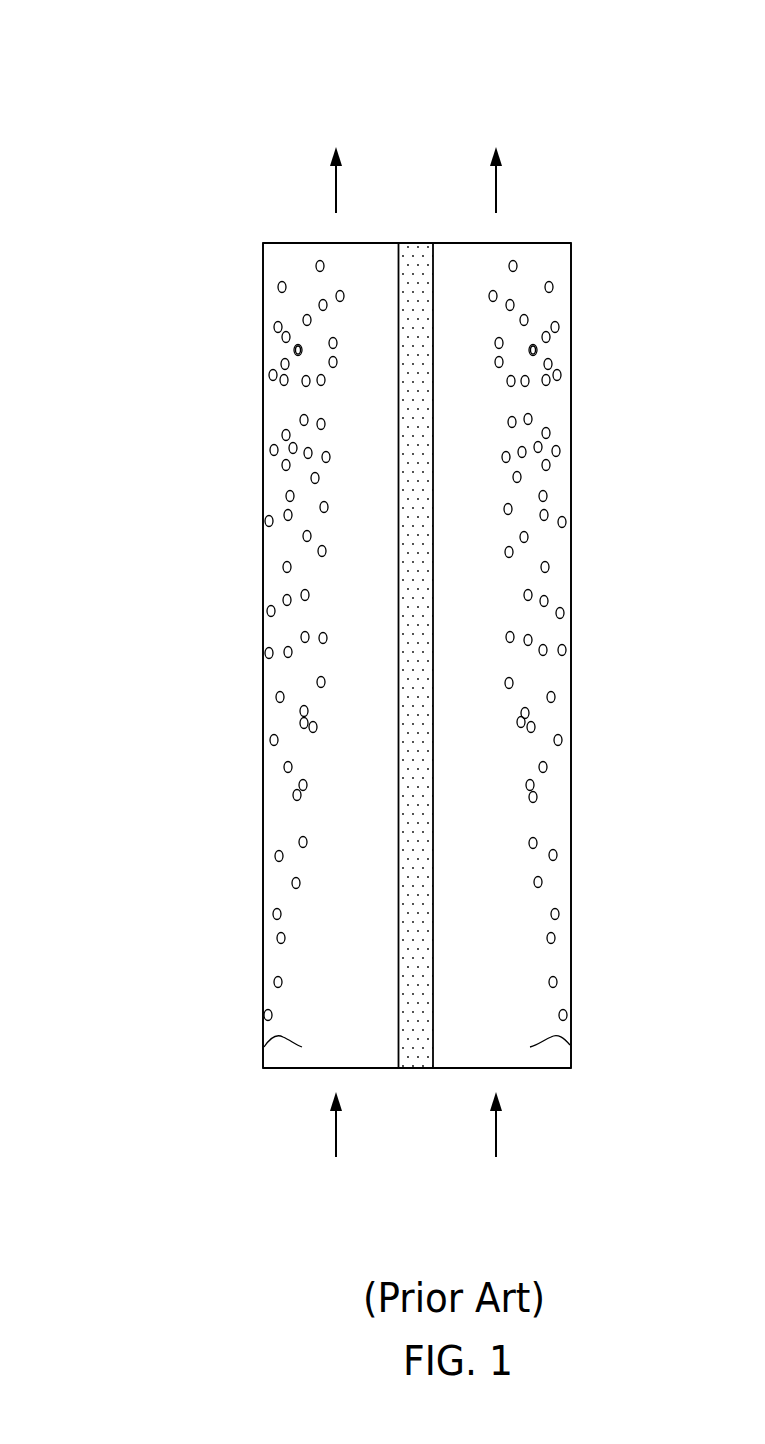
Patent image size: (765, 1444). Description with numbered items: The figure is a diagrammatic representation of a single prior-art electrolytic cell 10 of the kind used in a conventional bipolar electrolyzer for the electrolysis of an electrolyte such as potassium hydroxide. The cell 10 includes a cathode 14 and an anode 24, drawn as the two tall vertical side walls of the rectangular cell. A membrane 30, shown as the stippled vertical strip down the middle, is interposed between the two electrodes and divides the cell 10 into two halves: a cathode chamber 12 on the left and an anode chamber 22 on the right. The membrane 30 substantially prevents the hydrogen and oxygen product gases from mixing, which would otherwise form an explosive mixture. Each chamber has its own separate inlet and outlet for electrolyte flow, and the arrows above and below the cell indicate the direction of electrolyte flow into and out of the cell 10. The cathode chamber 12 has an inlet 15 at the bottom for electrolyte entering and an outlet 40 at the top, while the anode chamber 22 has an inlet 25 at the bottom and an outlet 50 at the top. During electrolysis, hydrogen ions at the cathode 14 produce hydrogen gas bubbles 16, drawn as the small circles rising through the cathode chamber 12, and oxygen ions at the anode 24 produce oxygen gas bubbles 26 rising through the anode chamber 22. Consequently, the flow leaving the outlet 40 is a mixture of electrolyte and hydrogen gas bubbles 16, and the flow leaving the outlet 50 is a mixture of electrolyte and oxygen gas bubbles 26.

The electrolytic cell 10 is at (183, 58).
The cathode chamber 12 is at (263, 1047).
The cathode 14 is at (262, 693).
The inlet 15 is at (295, 1070).
The hydrogen gas bubbles 16 is at (283, 567).
The anode chamber 22 is at (571, 1046).
The anode 24 is at (571, 693).
The inlet 25 is at (537, 1070).
The oxygen gas bubbles 26 is at (550, 567).
The membrane 30 is at (414, 447).
The outlet 40 is at (285, 243).
The outlet 50 is at (546, 243).